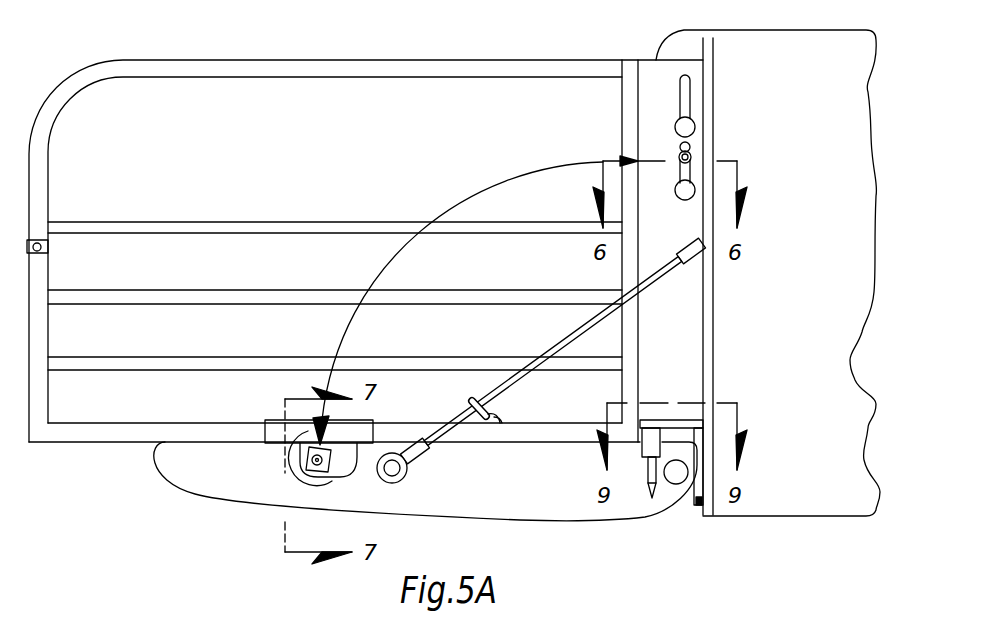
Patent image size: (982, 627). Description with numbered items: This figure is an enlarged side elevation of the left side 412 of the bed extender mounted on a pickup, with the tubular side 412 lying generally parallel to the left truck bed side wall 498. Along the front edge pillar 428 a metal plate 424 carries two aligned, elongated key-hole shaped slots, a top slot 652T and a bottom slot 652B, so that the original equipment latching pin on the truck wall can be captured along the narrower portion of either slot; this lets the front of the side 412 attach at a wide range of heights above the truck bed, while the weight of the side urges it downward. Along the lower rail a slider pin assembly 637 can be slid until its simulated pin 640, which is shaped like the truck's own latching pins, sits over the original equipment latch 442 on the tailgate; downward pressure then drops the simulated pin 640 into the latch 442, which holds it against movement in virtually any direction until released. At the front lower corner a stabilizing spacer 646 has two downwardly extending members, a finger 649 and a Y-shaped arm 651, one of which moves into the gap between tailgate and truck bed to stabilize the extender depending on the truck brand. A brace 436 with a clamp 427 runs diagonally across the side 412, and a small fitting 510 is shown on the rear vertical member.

The left side 412 is at (227, 60).
The latch 510 is at (41, 251).
The slider pin assembly 637 is at (312, 445).
The simulated pin 640 is at (315, 460).
The original equipment latch 442 is at (342, 470).
The brace strut 436 is at (494, 398).
The clamp 427 is at (498, 410).
The front edge pillar 428 is at (623, 122).
The top key-hole shaped slot 652T is at (688, 83).
The bottom key-hole shaped slot 652B is at (690, 148).
The metal plate 424 is at (683, 312).
The stabilizing spacer 646 is at (661, 418).
The Y-shaped arm 651 is at (676, 480).
The finger 649 is at (700, 505).
The left truck bed side wall 498 is at (783, 485).